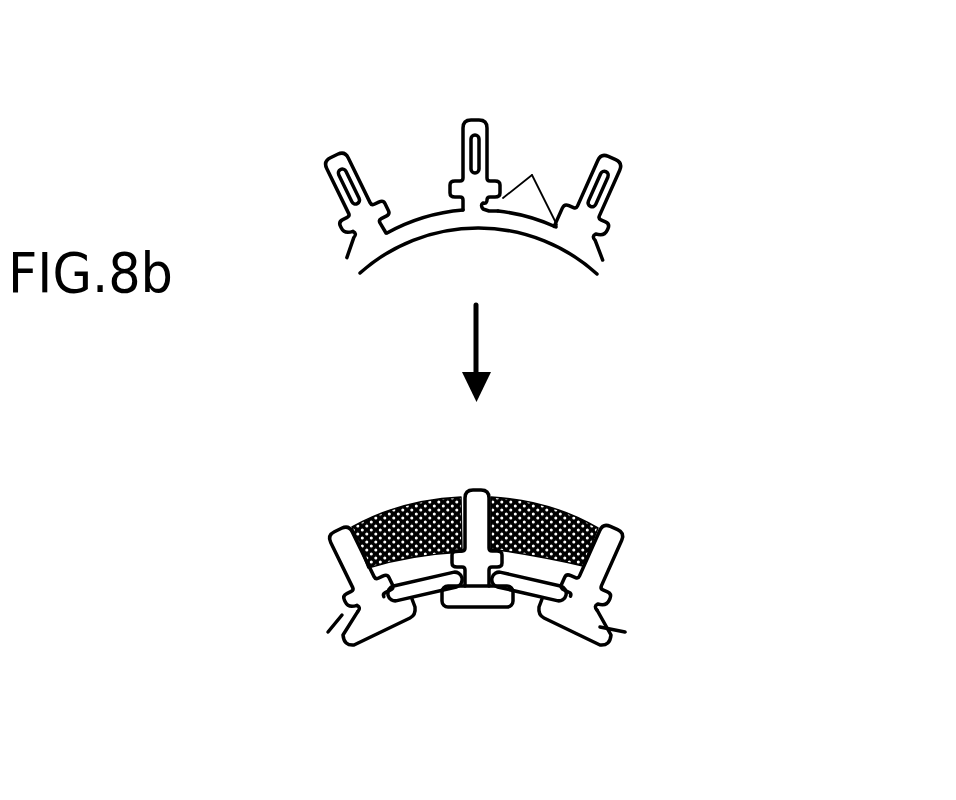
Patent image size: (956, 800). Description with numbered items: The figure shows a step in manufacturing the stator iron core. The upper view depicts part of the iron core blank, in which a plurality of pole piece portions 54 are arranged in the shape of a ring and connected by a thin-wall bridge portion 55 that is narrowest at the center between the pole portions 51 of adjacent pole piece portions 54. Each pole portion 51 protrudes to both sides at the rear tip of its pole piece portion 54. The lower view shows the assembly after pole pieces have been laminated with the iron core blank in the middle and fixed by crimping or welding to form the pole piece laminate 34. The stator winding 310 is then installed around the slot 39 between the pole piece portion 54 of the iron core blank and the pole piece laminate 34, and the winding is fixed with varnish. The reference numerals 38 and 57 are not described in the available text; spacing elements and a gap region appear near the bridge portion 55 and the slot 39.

The pole piece laminate 34 is at (330, 542).
The insulating spacer 38 is at (530, 587).
The slot 39 is at (344, 518).
The stator winding 310 is at (570, 513).
The pole portion 51 is at (473, 217).
The pole piece portion 54 is at (607, 153).
The bridge portion 55 is at (522, 230).
The gap 57 is at (532, 175).